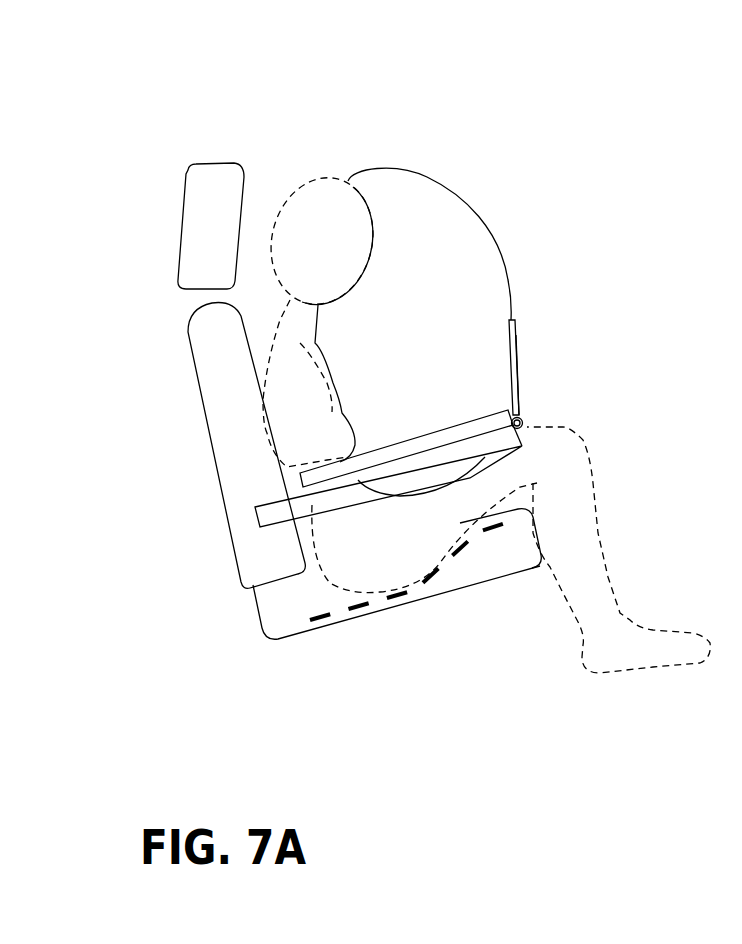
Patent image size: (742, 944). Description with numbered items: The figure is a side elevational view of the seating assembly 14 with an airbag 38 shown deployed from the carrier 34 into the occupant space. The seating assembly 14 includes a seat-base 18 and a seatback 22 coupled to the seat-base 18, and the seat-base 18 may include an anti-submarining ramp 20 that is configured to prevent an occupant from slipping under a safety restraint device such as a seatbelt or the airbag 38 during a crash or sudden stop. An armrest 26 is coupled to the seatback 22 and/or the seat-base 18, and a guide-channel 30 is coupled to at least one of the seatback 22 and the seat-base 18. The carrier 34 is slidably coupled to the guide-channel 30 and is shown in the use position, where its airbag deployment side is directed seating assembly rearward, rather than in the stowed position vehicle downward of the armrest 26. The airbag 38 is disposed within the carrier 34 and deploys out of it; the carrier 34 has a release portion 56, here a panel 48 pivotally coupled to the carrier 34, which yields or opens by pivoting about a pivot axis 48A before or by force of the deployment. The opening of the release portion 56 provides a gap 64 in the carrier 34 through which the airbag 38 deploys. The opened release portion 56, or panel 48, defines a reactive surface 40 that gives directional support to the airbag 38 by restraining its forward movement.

The seating assembly 14 is at (338, 372).
The seat-base 18 is at (505, 553).
The anti-submarining ramp 20 is at (444, 563).
The seatback 22 is at (220, 405).
The armrest 26 is at (335, 468).
The guide-channel 30 is at (270, 512).
The carrier 34 is at (533, 397).
The airbag 38 is at (380, 349).
The reactive surface 40 is at (505, 352).
The panel 48 is at (519, 360).
The pivot axis 48A is at (523, 422).
The release portion 56 is at (519, 315).
The gap 64 is at (467, 400).